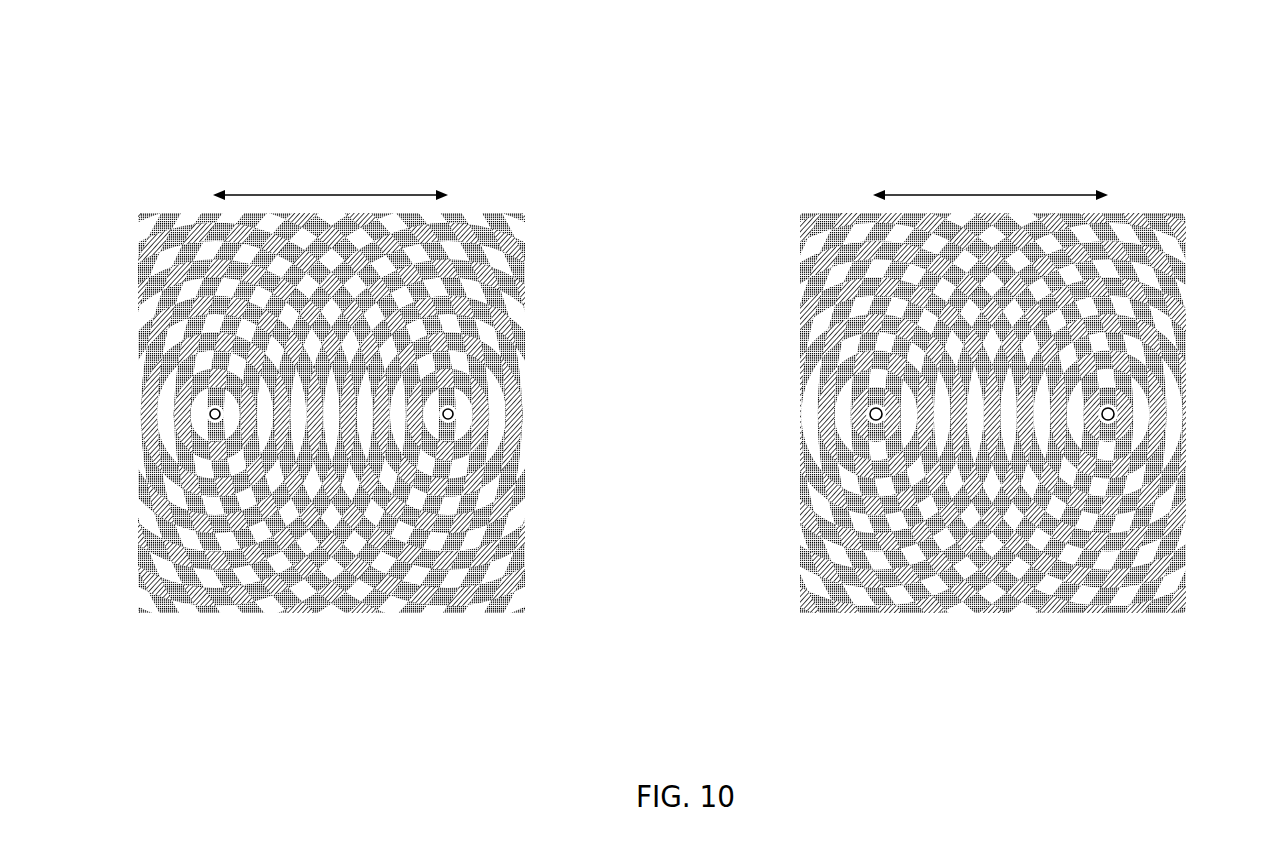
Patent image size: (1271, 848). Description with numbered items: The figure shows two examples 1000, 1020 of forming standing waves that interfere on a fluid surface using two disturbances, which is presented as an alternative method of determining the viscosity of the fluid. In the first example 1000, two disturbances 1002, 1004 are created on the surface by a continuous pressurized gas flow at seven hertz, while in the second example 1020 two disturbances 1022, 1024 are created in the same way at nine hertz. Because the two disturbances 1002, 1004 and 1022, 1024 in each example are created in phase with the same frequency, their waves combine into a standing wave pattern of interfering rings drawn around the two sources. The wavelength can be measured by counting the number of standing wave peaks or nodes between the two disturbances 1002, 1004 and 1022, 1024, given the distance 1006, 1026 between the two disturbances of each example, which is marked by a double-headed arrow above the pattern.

The first example 1000 is at (150, 66).
The disturbance 1002 is at (212, 409).
The disturbance 1004 is at (453, 408).
The distance 1006 is at (327, 194).
The second example 1020 is at (810, 66).
The disturbance 1022 is at (872, 408).
The disturbance 1024 is at (1113, 408).
The distance 1026 is at (987, 194).